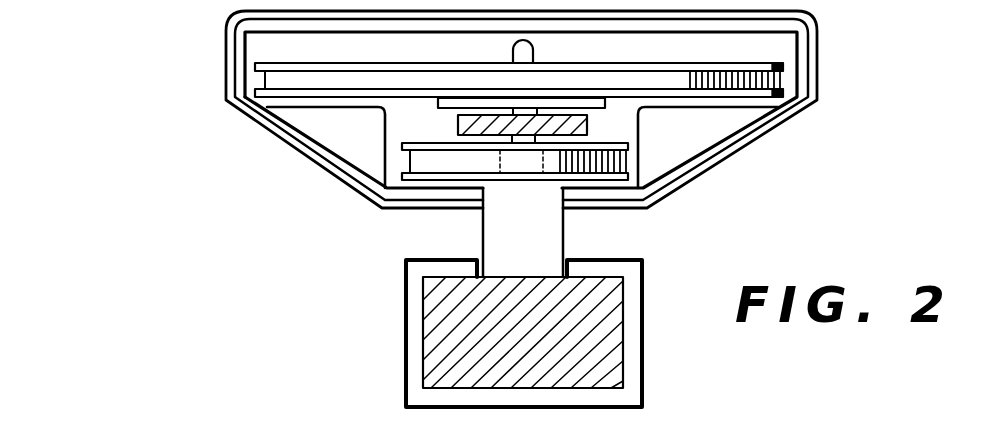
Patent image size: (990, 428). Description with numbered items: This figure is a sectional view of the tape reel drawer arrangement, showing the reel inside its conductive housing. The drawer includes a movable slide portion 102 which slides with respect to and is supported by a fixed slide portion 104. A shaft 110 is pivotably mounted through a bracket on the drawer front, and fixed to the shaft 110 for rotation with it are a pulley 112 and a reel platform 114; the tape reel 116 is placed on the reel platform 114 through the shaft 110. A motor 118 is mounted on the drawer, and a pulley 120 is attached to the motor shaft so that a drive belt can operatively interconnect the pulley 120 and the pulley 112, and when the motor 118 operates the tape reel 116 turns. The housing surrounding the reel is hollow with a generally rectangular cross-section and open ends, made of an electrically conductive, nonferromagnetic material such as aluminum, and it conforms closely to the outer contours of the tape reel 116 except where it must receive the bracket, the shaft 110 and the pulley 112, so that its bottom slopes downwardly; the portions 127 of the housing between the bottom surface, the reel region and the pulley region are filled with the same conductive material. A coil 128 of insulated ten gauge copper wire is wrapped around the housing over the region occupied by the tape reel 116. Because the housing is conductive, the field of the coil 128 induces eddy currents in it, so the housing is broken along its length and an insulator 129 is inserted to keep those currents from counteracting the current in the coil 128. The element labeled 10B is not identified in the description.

The movable slide portion 102 is at (433, 312).
The fixed slide portion 104 is at (415, 372).
The bearing block 10B is at (458, 123).
The shaft 110 is at (533, 50).
The pulley 112 is at (622, 137).
The reel platform 114 is at (480, 107).
The tape reel 116 is at (772, 63).
The motor 118 is at (550, 238).
The pulley 120 is at (510, 178).
The portions of housing 127 is at (310, 117).
The coil 128 is at (230, 62).
The insulator 129 is at (798, 71).